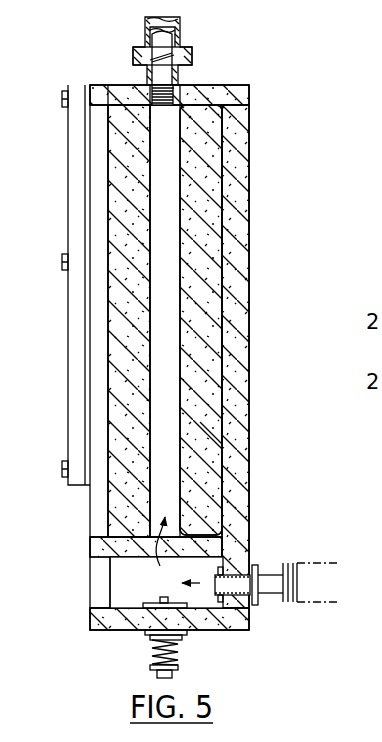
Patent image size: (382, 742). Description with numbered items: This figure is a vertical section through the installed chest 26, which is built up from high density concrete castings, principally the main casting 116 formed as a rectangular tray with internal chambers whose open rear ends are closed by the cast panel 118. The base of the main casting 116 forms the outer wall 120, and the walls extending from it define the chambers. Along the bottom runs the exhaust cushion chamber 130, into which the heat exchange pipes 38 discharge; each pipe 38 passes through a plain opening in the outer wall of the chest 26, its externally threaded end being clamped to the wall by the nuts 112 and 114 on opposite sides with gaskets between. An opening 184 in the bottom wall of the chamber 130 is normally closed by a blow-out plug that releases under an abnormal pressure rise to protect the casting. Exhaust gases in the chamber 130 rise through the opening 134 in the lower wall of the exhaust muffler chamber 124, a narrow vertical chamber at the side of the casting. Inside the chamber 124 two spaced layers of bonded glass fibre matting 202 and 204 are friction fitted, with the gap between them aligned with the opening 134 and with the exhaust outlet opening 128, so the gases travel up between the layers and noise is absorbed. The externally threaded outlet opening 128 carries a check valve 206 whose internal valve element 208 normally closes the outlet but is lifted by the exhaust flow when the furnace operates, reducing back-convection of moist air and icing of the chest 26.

The chest 26 is at (243, 87).
The heat exchange pipe 38 is at (270, 582).
The nut 112 is at (222, 600).
The nut 114 is at (258, 594).
The main casting 116 is at (251, 266).
The panel 118 is at (75, 303).
The outer wall 120 is at (240, 370).
The exhaust muffler chamber 124 is at (222, 444).
The exhaust outlet opening 128 is at (176, 91).
The exhaust cushion chamber 130 is at (125, 585).
The opening 134 is at (175, 550).
The blow-out plug 184 is at (153, 647).
The bonded glass fiber matting layer 202 is at (212, 226).
The bonded glass fiber matting layer 204 is at (120, 232).
The check valve 206 is at (193, 41).
The valve element 208 is at (143, 50).